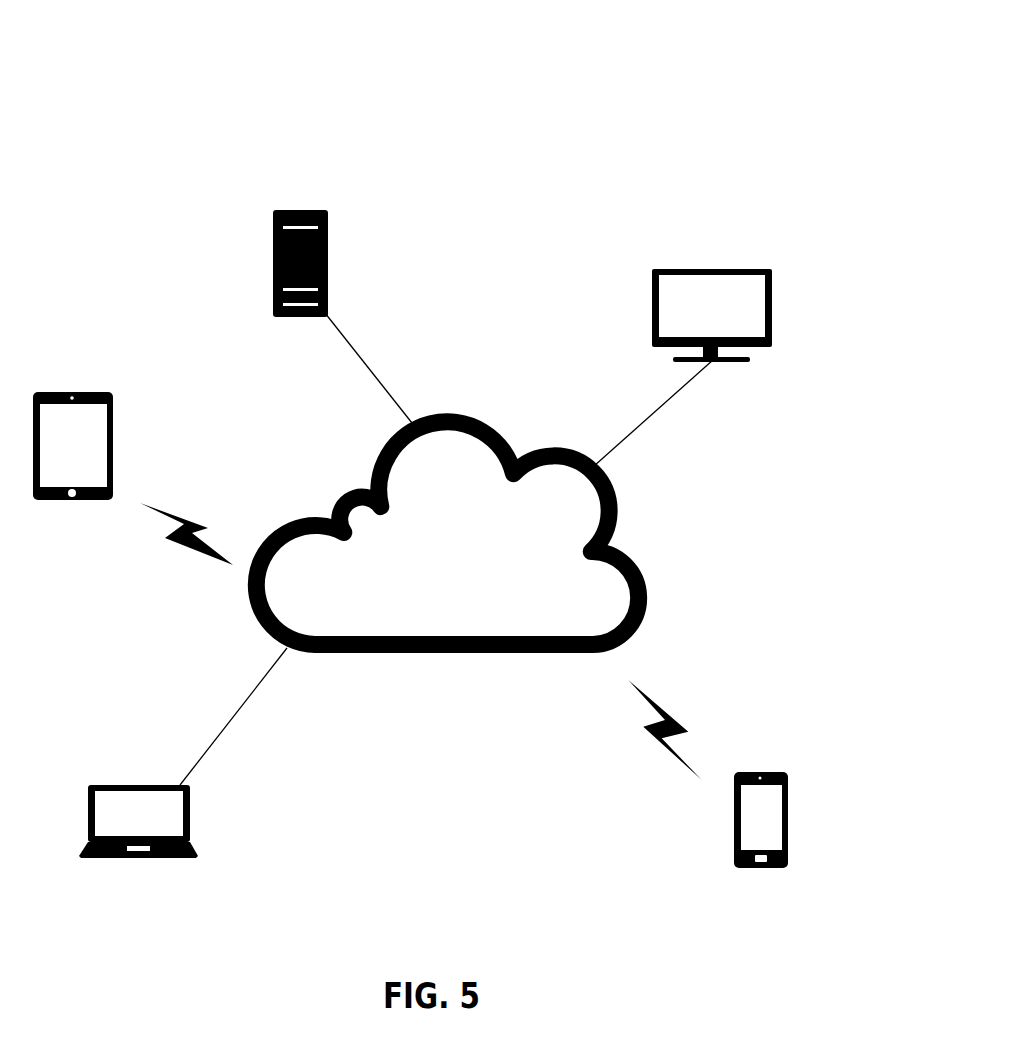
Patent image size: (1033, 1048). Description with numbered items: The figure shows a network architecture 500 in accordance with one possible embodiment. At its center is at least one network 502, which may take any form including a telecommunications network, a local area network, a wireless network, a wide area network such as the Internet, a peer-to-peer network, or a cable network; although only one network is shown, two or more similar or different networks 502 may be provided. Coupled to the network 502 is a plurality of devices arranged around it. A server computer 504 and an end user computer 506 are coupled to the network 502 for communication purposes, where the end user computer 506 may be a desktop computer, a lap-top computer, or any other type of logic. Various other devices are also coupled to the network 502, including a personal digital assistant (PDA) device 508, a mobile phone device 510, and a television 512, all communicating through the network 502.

The network architecture 500 is at (73, 82).
The network 502 is at (458, 654).
The server computer 504 is at (300, 208).
The end user computer 506 is at (135, 785).
The personal digital assistant (PDA) device 508 is at (75, 392).
The mobile phone device 510 is at (752, 771).
The television 512 is at (715, 268).